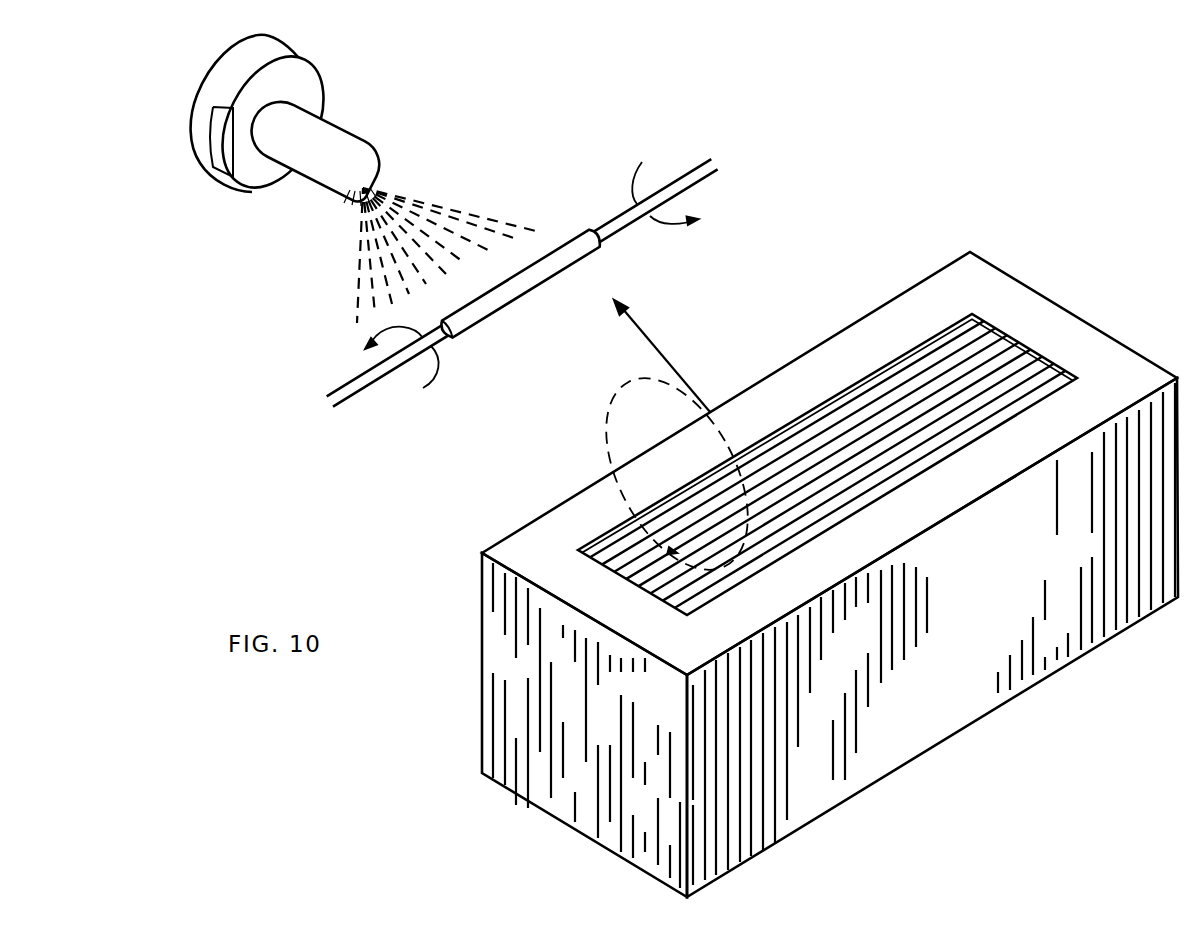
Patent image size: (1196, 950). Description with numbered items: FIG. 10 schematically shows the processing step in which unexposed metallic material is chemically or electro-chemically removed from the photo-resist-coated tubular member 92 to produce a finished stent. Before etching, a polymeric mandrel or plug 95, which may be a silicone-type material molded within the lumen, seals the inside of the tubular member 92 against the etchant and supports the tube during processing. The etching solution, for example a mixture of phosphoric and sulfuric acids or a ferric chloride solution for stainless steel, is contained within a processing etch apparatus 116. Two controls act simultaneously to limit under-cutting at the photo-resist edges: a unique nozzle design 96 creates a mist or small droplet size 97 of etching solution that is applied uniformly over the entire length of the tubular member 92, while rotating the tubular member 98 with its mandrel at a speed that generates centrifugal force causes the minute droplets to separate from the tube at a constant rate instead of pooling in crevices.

The tubular member 92 is at (575, 238).
The mandrel or plug 95 is at (700, 173).
The nozzle design 96 is at (394, 168).
The mist or small droplet size 97 is at (464, 197).
The rotating the tubular member 98 is at (652, 233).
The processing etch apparatus 116 is at (1052, 304).